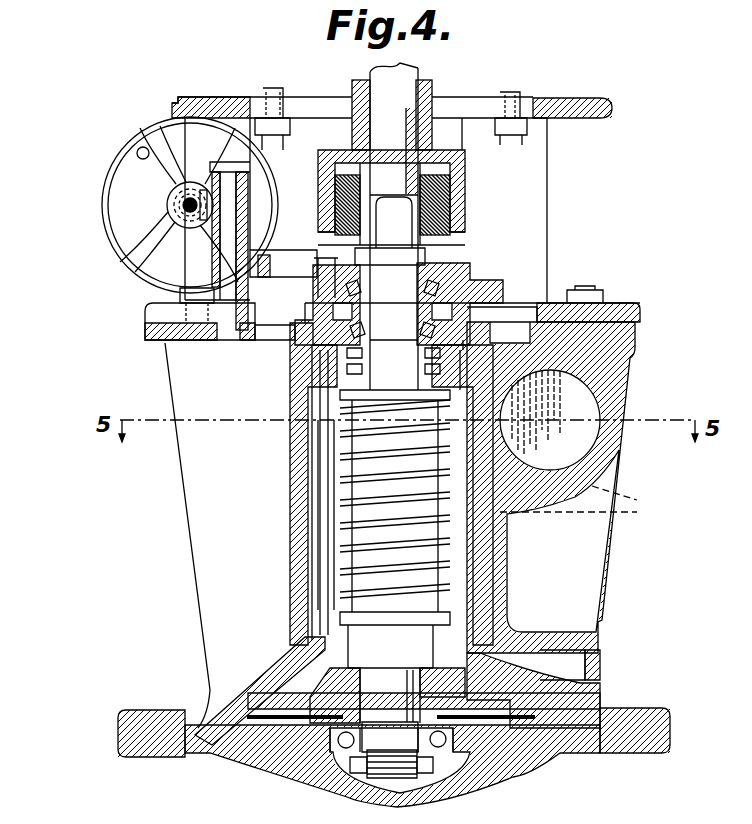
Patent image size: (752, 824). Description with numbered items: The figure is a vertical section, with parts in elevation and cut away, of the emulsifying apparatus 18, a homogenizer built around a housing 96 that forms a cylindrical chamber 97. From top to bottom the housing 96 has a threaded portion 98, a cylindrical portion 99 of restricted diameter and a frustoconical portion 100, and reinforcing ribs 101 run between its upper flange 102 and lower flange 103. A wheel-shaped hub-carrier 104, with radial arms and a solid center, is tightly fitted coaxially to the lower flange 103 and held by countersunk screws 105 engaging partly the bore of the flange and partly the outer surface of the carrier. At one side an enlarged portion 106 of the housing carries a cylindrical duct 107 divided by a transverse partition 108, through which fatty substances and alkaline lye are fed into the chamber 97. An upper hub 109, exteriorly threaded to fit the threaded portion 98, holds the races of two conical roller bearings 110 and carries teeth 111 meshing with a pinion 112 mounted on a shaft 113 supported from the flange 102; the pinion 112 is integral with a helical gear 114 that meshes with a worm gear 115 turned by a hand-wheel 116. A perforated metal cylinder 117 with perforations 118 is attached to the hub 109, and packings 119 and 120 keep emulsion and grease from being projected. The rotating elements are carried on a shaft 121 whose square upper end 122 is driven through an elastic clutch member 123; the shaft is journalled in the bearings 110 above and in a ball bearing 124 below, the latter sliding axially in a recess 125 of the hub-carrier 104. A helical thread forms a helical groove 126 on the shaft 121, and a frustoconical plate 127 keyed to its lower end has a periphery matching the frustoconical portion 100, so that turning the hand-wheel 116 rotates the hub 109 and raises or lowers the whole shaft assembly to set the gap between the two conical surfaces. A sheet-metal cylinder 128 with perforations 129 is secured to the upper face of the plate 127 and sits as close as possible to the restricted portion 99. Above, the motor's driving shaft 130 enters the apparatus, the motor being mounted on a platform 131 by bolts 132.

The emulsifying apparatus 18 is at (186, 574).
The housing 96 is at (298, 492).
The cylindrical chamber 97 is at (313, 462).
The threaded portion 98 is at (296, 345).
The cylindrical portion of restricted diameter 99 is at (320, 620).
The frustoconical portion 100 is at (248, 700).
The reinforcing ribs 101 is at (205, 500).
The upper flange 102 is at (168, 341).
The lower flange 103 is at (180, 695).
The hub-carrier 104 is at (290, 760).
The countersunk screws 105 is at (183, 757).
The enlarged portion 106 is at (600, 478).
The cylindrical duct 107 is at (593, 655).
The transverse partition 108 is at (590, 440).
The upper hub 109 is at (312, 362).
The conical roller bearings 110 is at (533, 303).
The teeth 111 is at (483, 323).
The pinion 112 is at (202, 290).
The shaft 113 is at (198, 272).
The helical gear 114 is at (255, 195).
The worm gear 115 is at (172, 203).
The hand-wheel 116 is at (148, 132).
The metal cylinder 117 is at (296, 408).
The perforations 118 is at (304, 452).
The packing 119 is at (550, 420).
The packing 120 is at (425, 258).
The shaft 121 is at (345, 266).
The upper end of square cross-section 122 is at (462, 212).
The elastic clutch member 123 is at (468, 170).
The ball bearing 124 is at (446, 742).
The recess 125 is at (448, 766).
The helical groove 126 is at (446, 540).
The frustoconical plate 127 is at (258, 668).
The cylinder 128 is at (312, 552).
The perforations 129 is at (322, 588).
The driving shaft 130 is at (405, 86).
The platform 131 is at (588, 106).
The bolts 132 is at (530, 130).